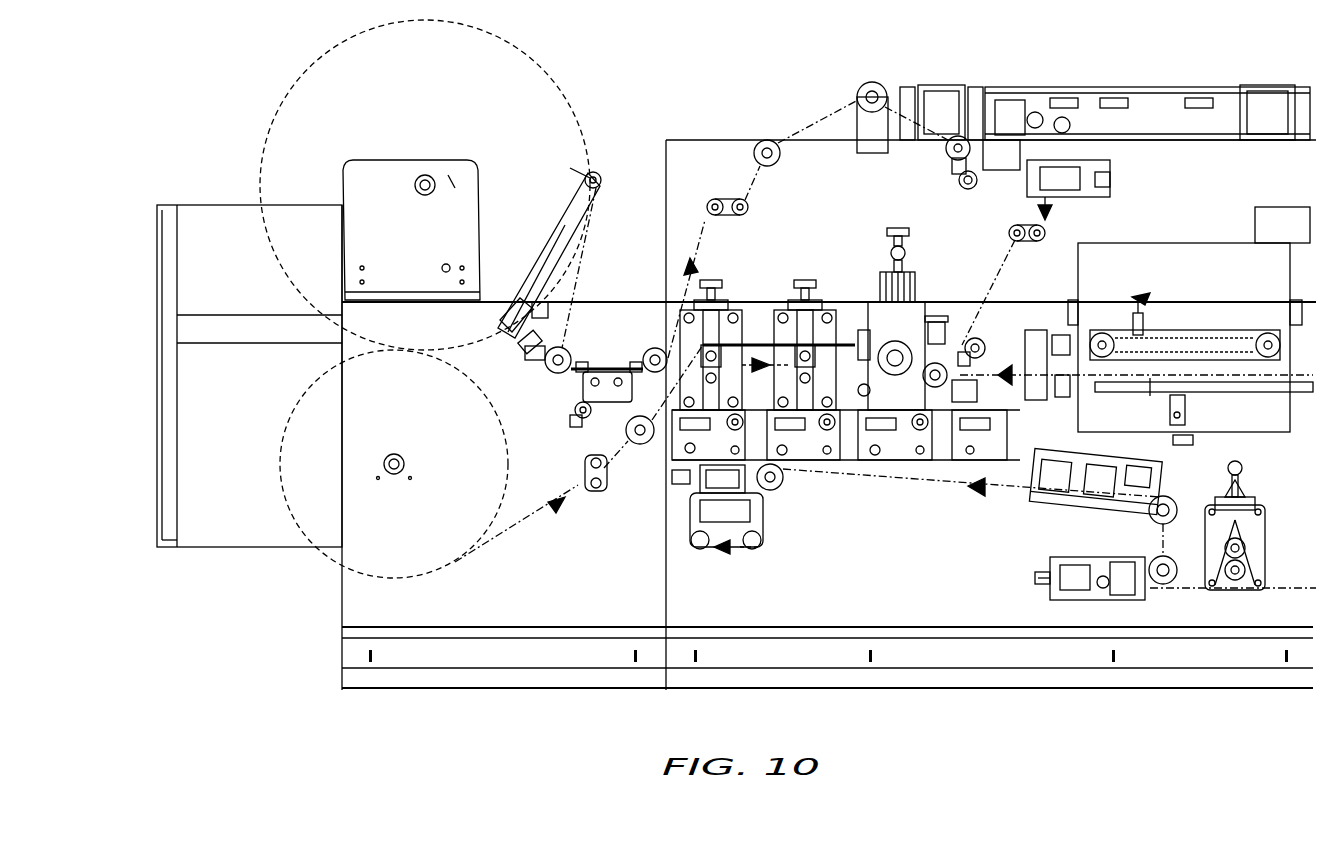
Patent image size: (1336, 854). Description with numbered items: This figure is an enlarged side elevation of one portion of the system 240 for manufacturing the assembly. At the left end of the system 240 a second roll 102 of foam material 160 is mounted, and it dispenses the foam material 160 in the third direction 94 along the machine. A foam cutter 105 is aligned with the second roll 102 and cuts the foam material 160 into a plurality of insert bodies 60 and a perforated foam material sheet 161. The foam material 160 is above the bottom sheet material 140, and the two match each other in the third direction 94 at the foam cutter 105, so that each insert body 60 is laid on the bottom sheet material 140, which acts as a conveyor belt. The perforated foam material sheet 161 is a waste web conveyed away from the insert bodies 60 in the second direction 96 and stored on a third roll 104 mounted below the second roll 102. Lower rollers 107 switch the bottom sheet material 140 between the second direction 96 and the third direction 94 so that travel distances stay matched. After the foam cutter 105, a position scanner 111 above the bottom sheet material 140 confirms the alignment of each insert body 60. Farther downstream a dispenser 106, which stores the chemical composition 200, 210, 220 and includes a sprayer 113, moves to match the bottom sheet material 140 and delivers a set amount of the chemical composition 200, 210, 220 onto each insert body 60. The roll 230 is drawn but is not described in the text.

The first roll of web material 230 is at (315, 62).
The foam material 160 is at (272, 128).
The second roll 102 is at (420, 175).
The perforated foam material sheet 161 is at (305, 538).
The third roll 104 is at (400, 482).
The system 240 is at (610, 128).
The foam cutter 105 is at (885, 280).
The position scanner 111 is at (965, 345).
The insert body 60 is at (985, 368).
The dispenser 106 is at (1215, 242).
The chemical composition 200 is at (1185, 306).
The chemical composition 210 is at (1149, 304).
The chemical composition 220 is at (1247, 304).
The bottom sheet material 140 is at (1000, 492).
The sprayer 113 is at (1187, 418).
The lower roller 107 is at (780, 490).
The second direction 96 is at (195, 747).
The third direction 94 is at (1283, 747).